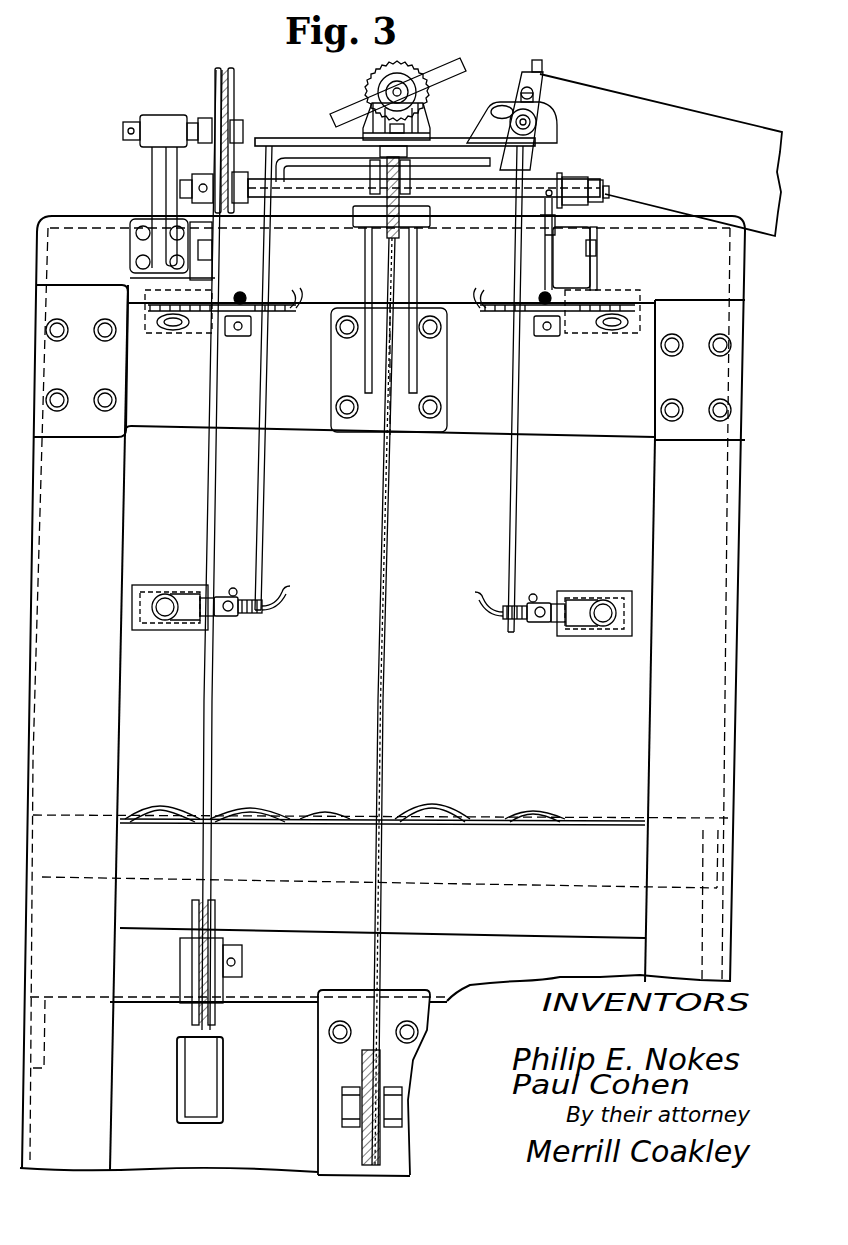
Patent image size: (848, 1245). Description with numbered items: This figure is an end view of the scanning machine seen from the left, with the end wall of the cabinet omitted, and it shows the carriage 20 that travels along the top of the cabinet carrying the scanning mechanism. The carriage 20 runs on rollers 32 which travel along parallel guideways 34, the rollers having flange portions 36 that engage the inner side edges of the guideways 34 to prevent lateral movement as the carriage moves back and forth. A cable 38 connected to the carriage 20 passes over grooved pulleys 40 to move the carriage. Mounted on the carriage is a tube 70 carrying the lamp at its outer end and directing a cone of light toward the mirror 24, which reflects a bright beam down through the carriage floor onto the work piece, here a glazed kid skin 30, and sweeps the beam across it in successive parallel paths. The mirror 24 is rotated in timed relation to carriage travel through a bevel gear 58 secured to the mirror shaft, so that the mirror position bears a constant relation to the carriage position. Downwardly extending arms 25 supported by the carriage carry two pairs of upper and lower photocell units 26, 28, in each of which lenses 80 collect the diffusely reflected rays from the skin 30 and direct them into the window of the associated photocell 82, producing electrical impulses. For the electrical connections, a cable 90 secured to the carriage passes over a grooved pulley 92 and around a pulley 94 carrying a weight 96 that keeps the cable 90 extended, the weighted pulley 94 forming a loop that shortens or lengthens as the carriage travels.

The carriage 20 is at (440, 164).
The mirror 24 is at (452, 62).
The downwardly extending arms 25 is at (264, 513).
The upper photocell units 26 is at (187, 348).
The lower photocell units 28 is at (147, 646).
The glazed kid skin 30 is at (443, 806).
The rollers 32 is at (582, 186).
The guideways 34 is at (185, 216).
The flange portions 36 is at (561, 182).
The cable 38 is at (384, 737).
The grooved pulleys 40 is at (399, 258).
The bevel gear 58 is at (368, 82).
The tube 70 is at (683, 104).
The lenses 80 is at (607, 342).
The photocell 82 is at (163, 336).
The cable 90 is at (224, 72).
The grooved pulley 92 is at (235, 112).
The pulley 94 is at (218, 908).
The weight 96 is at (212, 1066).